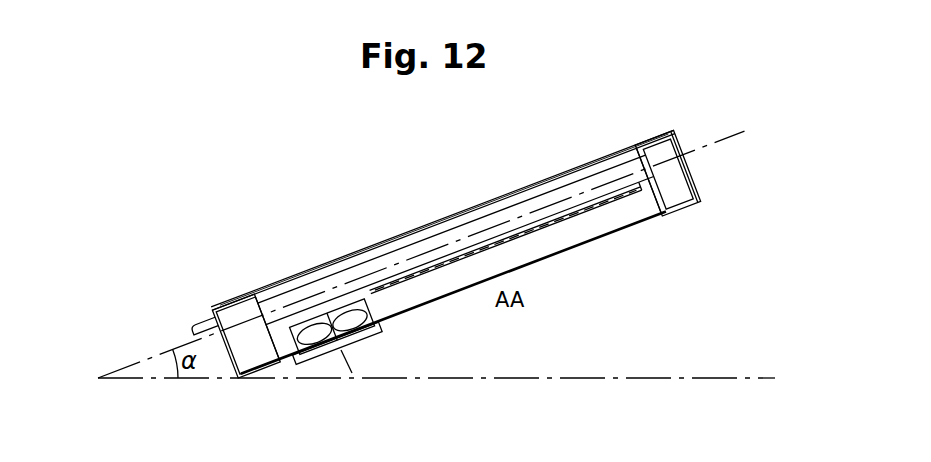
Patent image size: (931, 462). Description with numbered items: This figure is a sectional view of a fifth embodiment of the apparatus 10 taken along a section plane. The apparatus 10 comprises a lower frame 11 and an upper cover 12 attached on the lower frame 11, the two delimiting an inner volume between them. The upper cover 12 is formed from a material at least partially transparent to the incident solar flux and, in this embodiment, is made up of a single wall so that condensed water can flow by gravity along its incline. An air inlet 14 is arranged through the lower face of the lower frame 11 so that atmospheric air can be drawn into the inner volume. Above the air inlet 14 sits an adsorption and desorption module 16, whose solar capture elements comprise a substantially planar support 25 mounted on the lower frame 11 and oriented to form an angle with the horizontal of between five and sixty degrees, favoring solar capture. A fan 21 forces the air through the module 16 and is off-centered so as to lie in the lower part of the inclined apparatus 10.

The apparatus 10 is at (420, 203).
The lower frame 11 is at (687, 190).
The upper cover 12 is at (318, 272).
The air inlet 14 is at (314, 353).
The adsorption and desorption module 16 is at (554, 166).
The fan 21 is at (353, 321).
The support 25 is at (593, 212).